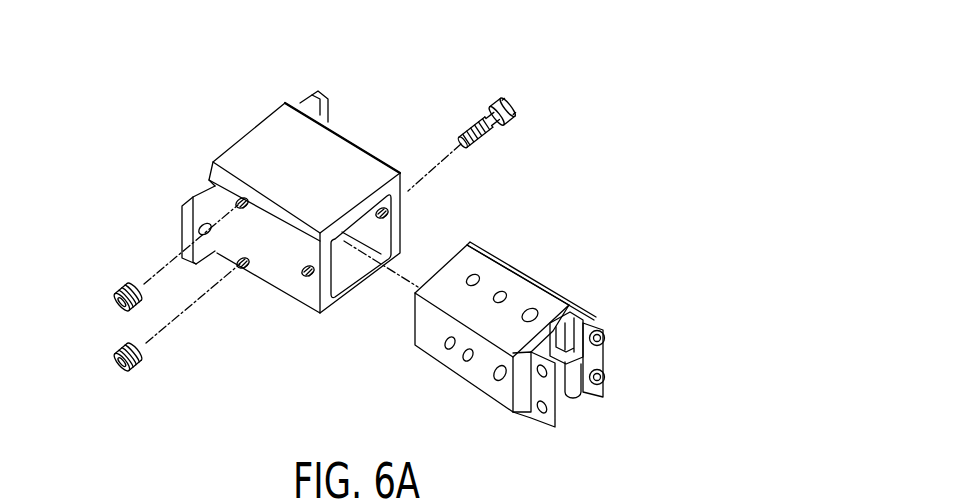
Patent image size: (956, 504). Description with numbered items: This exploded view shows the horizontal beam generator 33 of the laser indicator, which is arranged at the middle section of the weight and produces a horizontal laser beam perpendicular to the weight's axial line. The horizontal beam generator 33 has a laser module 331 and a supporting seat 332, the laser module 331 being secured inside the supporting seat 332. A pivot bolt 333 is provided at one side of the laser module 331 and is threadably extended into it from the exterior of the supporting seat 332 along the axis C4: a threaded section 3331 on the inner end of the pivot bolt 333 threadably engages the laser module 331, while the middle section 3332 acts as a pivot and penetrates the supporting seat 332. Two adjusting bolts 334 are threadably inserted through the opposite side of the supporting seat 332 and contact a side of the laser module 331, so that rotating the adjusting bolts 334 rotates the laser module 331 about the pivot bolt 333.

The horizontal beam generator 33 is at (196, 84).
The laser module 331 is at (540, 290).
The supporting seat 332 is at (258, 126).
The pivot bolt 333 is at (512, 103).
The threaded section 3331 is at (470, 132).
The middle section 3332 is at (490, 112).
The adjusting bolts 334 is at (125, 287).
The axis C4 is at (444, 169).